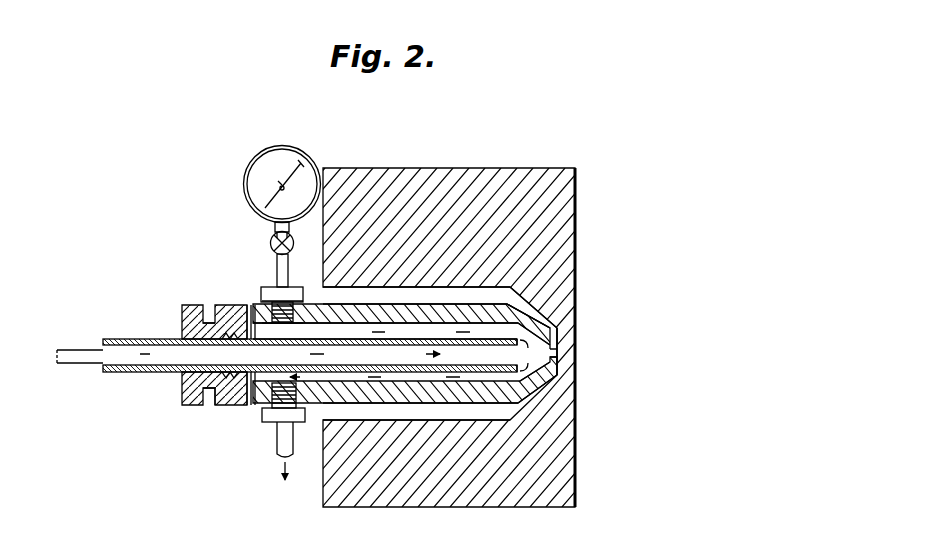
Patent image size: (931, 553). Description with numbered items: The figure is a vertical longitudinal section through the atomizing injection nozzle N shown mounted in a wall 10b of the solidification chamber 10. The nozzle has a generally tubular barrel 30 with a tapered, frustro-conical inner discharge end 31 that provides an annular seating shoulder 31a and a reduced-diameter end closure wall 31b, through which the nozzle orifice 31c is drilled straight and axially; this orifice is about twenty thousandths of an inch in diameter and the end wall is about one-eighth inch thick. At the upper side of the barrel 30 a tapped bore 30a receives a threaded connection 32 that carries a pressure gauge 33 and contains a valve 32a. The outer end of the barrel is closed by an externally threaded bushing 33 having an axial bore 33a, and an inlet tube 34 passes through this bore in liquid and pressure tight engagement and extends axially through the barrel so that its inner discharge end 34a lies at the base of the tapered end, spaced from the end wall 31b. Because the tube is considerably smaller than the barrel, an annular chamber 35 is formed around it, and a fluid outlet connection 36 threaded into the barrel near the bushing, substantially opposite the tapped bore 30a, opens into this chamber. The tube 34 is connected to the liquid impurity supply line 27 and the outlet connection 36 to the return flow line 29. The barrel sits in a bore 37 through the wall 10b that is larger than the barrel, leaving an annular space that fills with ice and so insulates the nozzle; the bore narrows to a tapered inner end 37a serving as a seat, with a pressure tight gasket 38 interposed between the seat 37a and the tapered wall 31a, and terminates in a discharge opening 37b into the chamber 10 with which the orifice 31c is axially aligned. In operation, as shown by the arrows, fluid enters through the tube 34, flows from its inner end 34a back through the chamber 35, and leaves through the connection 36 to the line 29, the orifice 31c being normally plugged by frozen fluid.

The chamber 10 is at (584, 233).
The wall 10b is at (555, 187).
The liquid impurity supply line 27 is at (90, 358).
The return flow line 29 is at (283, 429).
The nozzle barrel 30 is at (239, 306).
The tapped bore 30a is at (260, 301).
The inner discharge end 31 is at (558, 340).
The annular seating shoulder 31a is at (536, 313).
The end closure wall 31b is at (567, 366).
The nozzle orifice 31c is at (560, 353).
The connection 32 is at (276, 262).
The valve 32a is at (272, 238).
The pressure gauge 33 is at (306, 170).
The axial bore 33a is at (186, 371).
The inlet tube 34 is at (140, 372).
The inner discharge end 34a is at (524, 371).
The annular chamber 35 is at (403, 335).
The fluid outlet connection 36 is at (268, 394).
The bore 37 is at (379, 299).
The inner end 37a is at (546, 392).
The discharge opening 37b is at (566, 358).
The gasket 38 is at (549, 329).
The nozzle N is at (230, 410).